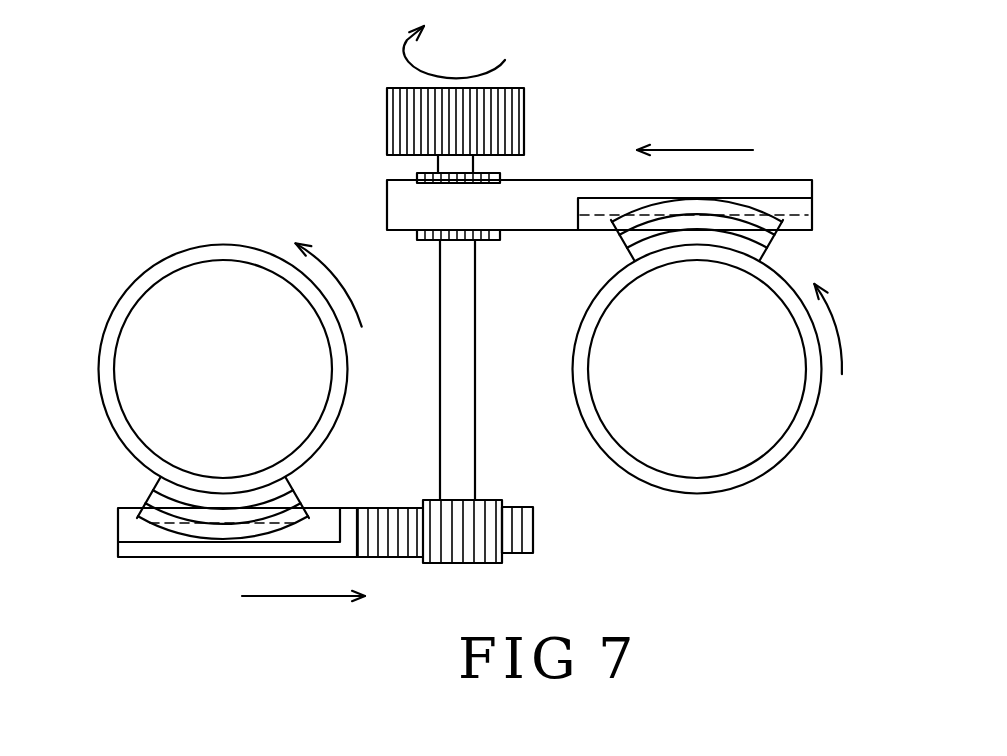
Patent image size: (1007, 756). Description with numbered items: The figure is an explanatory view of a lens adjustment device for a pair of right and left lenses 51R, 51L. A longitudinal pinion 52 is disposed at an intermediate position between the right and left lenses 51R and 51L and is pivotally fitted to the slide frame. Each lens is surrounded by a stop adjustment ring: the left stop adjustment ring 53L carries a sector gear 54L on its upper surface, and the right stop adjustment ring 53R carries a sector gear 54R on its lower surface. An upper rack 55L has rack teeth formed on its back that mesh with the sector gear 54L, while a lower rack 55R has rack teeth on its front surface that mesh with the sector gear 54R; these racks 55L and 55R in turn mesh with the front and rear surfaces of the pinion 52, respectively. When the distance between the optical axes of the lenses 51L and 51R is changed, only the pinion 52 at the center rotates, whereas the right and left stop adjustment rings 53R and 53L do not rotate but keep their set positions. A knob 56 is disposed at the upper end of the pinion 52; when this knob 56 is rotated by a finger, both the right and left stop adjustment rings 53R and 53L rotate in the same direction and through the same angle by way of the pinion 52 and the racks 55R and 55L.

The right lens 51R is at (133, 394).
The left lens 51L is at (733, 460).
The longitudinal pinion 52 is at (425, 241).
The right stop adjustment ring 53R is at (127, 294).
The left stop adjustment ring 53L is at (797, 448).
The sector gear 54R is at (150, 493).
The sector gear 54L is at (778, 240).
The lower rack 55R is at (173, 558).
The upper rack 55L is at (582, 181).
The knob 56 is at (387, 110).